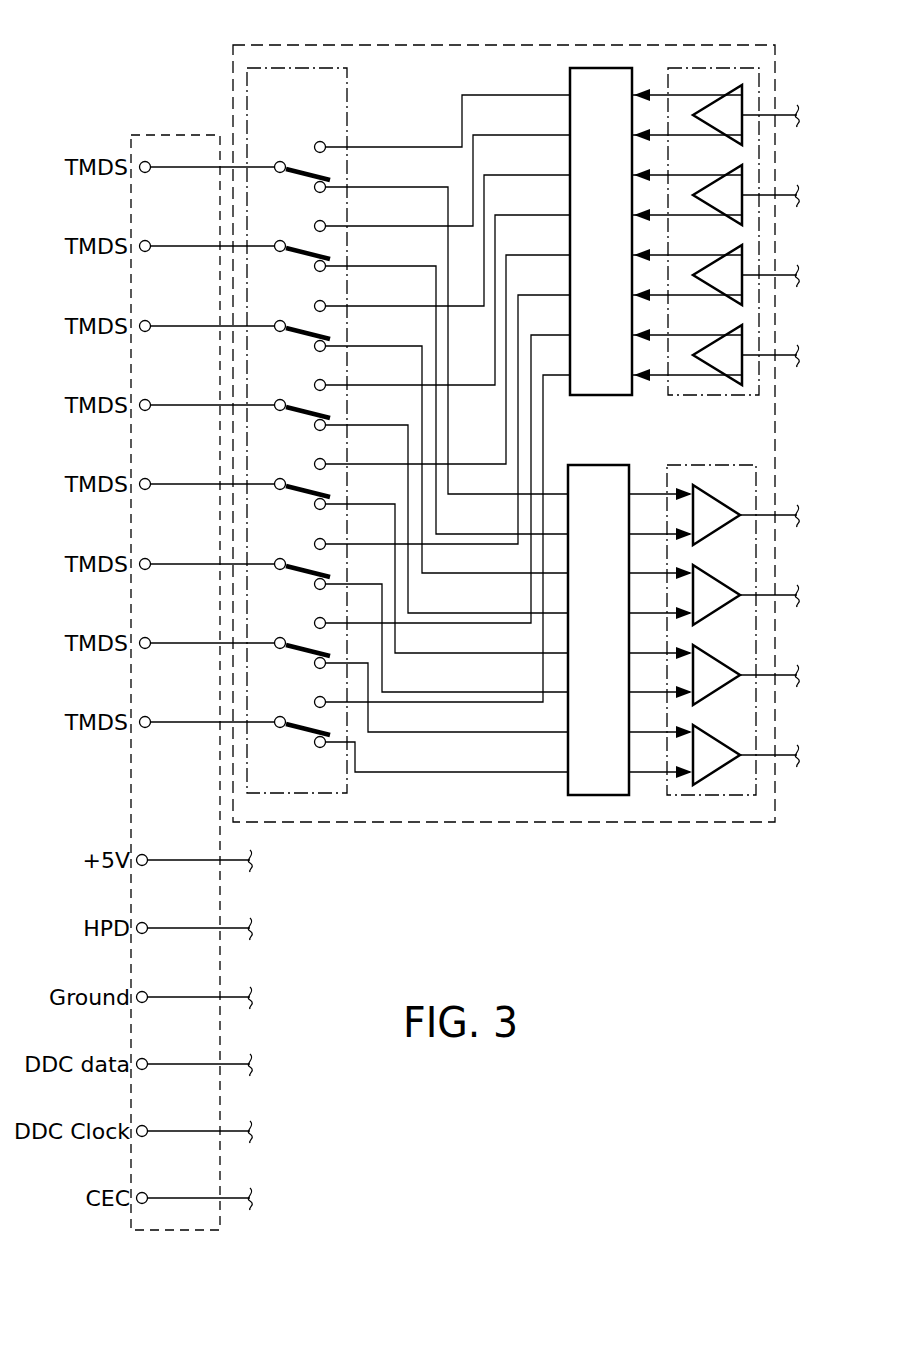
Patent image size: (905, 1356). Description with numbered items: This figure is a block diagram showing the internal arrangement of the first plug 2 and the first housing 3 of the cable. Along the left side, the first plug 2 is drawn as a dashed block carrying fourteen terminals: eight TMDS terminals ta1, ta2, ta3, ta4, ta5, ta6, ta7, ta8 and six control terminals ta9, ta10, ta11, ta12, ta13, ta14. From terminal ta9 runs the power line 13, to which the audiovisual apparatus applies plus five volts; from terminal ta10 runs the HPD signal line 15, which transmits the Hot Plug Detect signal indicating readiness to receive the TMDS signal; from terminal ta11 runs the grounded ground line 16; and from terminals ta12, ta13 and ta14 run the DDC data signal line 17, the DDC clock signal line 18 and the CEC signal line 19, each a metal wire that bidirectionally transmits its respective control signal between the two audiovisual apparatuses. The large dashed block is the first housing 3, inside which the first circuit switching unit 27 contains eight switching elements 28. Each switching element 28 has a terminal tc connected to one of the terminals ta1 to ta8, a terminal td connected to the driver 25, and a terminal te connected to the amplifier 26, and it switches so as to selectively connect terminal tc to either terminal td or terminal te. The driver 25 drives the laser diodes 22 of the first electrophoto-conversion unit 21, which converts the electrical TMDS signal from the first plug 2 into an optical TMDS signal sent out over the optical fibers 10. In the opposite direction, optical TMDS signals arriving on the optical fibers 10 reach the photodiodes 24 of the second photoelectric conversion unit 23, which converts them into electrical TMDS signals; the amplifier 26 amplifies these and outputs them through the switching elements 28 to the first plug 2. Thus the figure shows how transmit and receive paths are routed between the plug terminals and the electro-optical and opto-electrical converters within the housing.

The first plug 2 is at (178, 1232).
The first housing 3 is at (461, 824).
The optical fibers 10 is at (798, 106).
The power line 13 is at (250, 862).
The HPD signal line 15 is at (250, 930).
The ground line 16 is at (250, 999).
The DDC data signal line 17 is at (250, 1066).
The DDC clock signal line 18 is at (250, 1133).
The CEC signal line 19 is at (250, 1200).
The first electrophoto-conversion unit 21 is at (720, 797).
The laser diodes 22 is at (723, 527).
The second photoelectric conversion unit 23 is at (693, 68).
The photodiodes 24 is at (745, 127).
The driver 25 is at (596, 797).
The amplifier 26 is at (602, 68).
The first circuit switching unit 27 is at (347, 785).
The switching element 28 is at (293, 132).
The terminal ta1 is at (148, 173).
The terminal ta2 is at (148, 252).
The terminal ta3 is at (148, 332).
The terminal ta4 is at (148, 411).
The terminal ta5 is at (148, 490).
The terminal ta6 is at (148, 570).
The terminal ta7 is at (148, 649).
The terminal ta8 is at (148, 728).
The terminal ta9 is at (146, 855).
The terminal ta10 is at (146, 923).
The terminal ta11 is at (146, 992).
The terminal ta12 is at (146, 1059).
The terminal ta13 is at (146, 1126).
The terminal ta14 is at (146, 1193).
The terminal tc is at (281, 161).
The terminal td is at (316, 191).
The terminal te is at (321, 141).